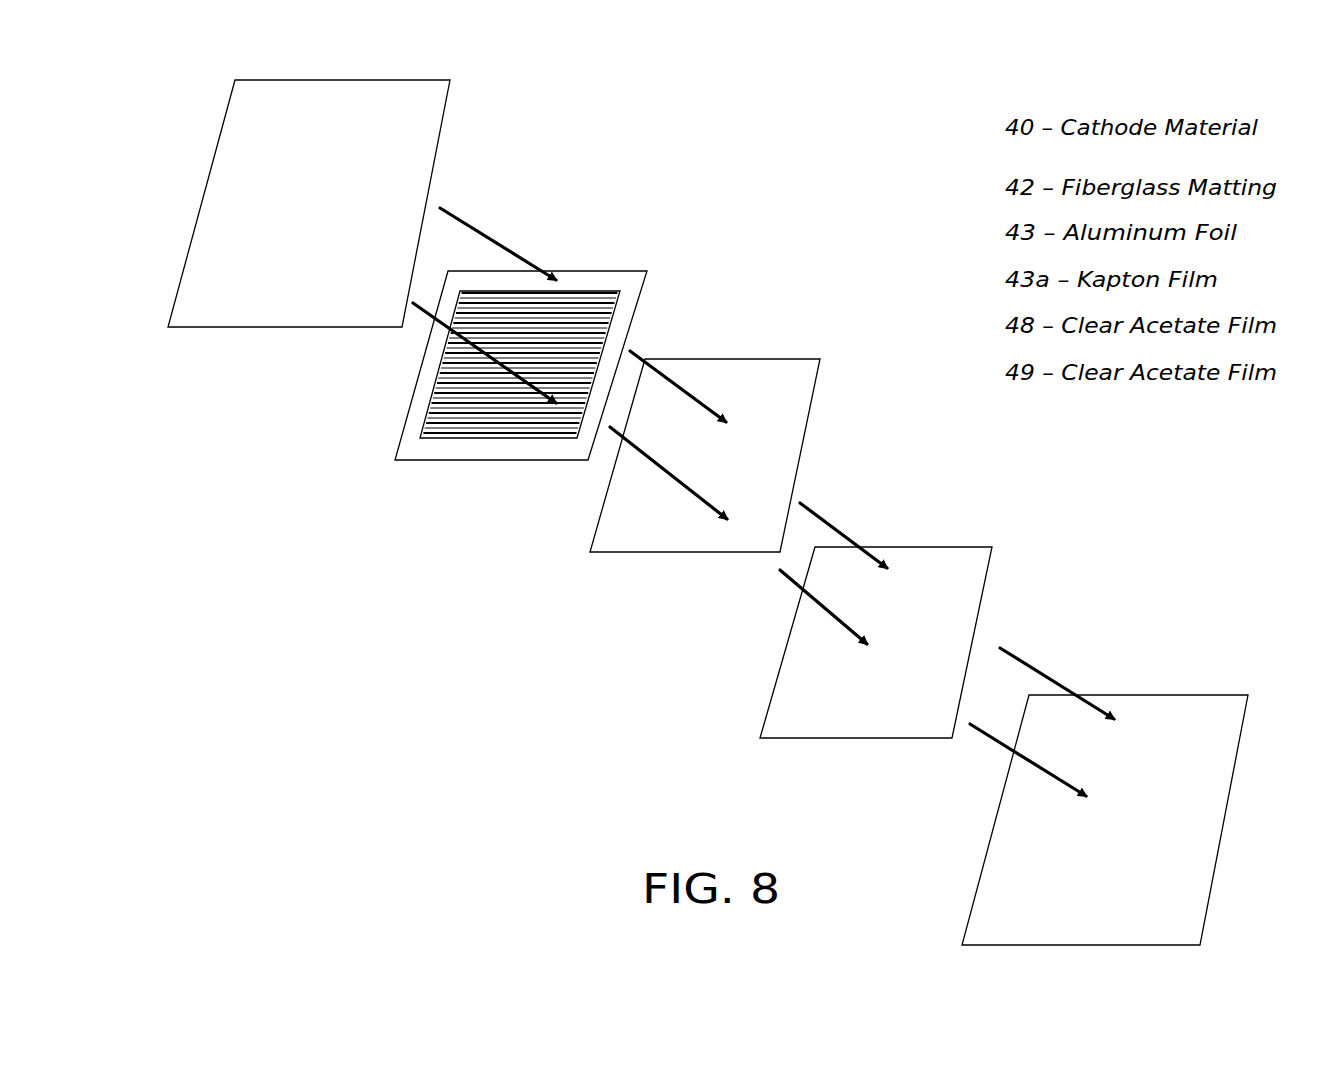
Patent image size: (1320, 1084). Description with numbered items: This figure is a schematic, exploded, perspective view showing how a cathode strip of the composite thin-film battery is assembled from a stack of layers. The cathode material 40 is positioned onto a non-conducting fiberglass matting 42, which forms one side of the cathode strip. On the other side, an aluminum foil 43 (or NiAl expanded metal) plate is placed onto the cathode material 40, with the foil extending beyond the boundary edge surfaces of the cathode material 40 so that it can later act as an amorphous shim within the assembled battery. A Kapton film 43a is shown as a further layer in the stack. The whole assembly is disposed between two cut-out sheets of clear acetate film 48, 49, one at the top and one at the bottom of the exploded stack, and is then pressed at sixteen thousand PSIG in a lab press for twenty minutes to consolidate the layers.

The cathode material 40 is at (582, 322).
The fiberglass matting 42 is at (396, 380).
The aluminum foil 43 is at (752, 341).
The Kapton Film 43a is at (952, 512).
The clear acetate film 48 is at (287, 156).
The clear acetate film 49 is at (1189, 752).